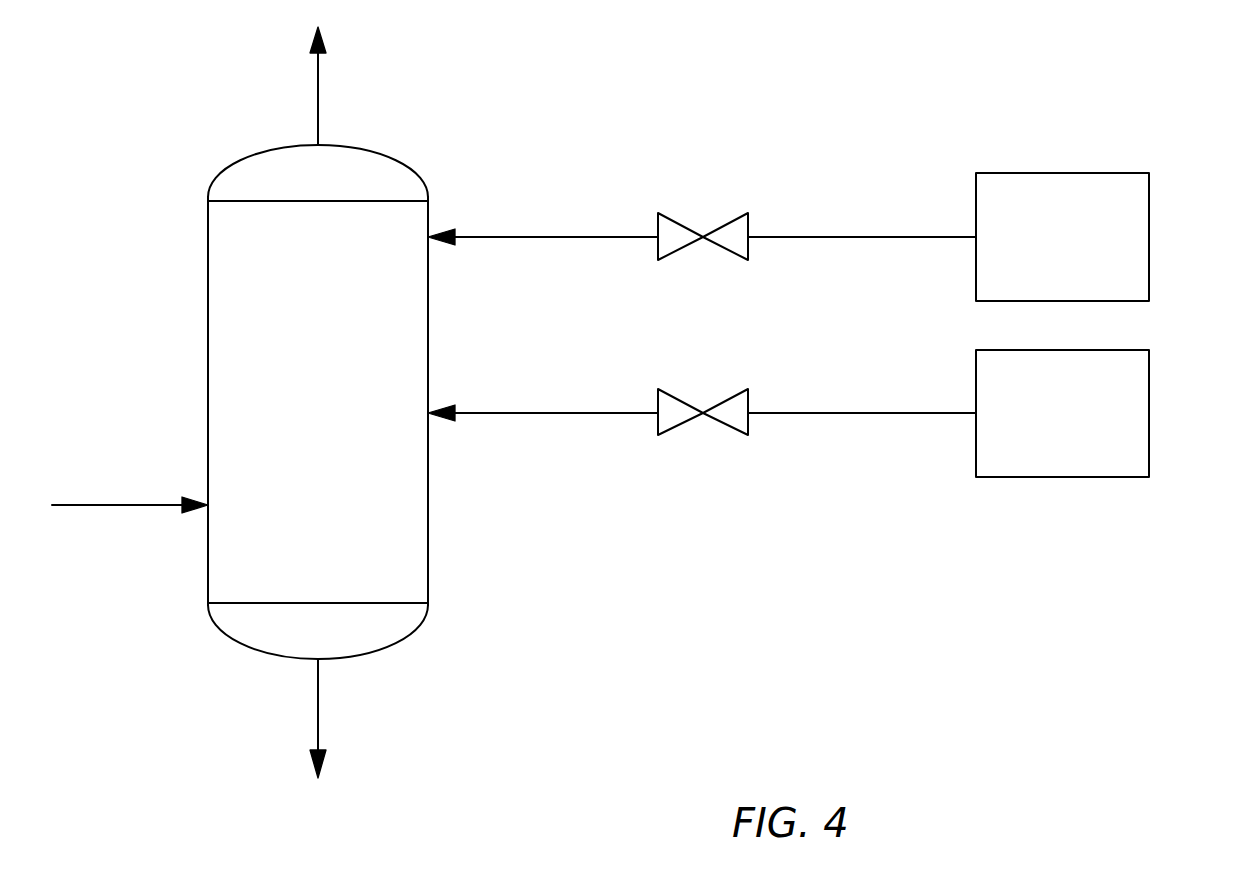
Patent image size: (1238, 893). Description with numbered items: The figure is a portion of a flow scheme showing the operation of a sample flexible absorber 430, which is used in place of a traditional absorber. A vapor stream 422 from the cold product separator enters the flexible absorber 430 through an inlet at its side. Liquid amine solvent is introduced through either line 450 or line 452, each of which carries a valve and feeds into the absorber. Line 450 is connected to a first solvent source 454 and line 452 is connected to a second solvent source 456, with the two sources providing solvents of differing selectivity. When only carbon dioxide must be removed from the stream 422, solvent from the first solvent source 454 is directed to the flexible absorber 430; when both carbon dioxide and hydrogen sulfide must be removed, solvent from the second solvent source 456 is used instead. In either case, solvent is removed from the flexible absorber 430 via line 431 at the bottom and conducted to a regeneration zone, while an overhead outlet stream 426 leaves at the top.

The vapor stream 422 is at (117, 503).
The overhead outlet stream 426 is at (318, 86).
The flexible absorber 430 is at (402, 163).
The line 431 is at (318, 720).
The line 450 is at (545, 235).
The line 452 is at (545, 415).
The first solvent source 454 is at (1126, 173).
The second solvent source 456 is at (1126, 350).